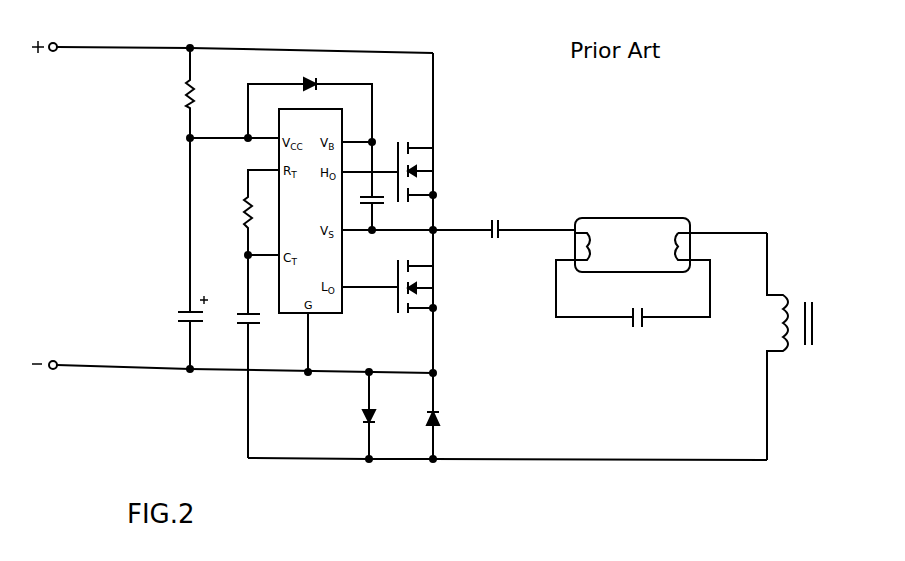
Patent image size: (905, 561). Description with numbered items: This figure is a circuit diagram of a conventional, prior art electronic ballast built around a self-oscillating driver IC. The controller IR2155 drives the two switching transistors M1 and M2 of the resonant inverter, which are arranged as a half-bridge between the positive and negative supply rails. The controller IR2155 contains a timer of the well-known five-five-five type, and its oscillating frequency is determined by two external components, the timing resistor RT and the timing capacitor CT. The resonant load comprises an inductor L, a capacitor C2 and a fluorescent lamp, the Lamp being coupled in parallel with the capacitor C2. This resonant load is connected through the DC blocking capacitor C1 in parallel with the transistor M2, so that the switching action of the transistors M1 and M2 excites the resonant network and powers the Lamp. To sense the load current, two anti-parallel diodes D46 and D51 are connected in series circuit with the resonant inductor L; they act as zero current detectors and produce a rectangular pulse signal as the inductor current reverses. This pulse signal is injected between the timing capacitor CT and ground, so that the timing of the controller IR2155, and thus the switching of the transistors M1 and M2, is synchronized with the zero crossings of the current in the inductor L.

The controller IR2155 is at (310, 211).
The timing resistor RT is at (247, 212).
The timing capacitor CT is at (228, 356).
The switching transistor M1 is at (437, 141).
The switching transistor M2 is at (442, 301).
The anti-parallel diode D46 is at (341, 417).
The anti-parallel diode D51 is at (458, 417).
The DC blocking capacitor C1 is at (530, 243).
The capacitor C2 is at (636, 334).
The fluorescent lamp Lamp is at (661, 251).
The inductor L is at (800, 346).